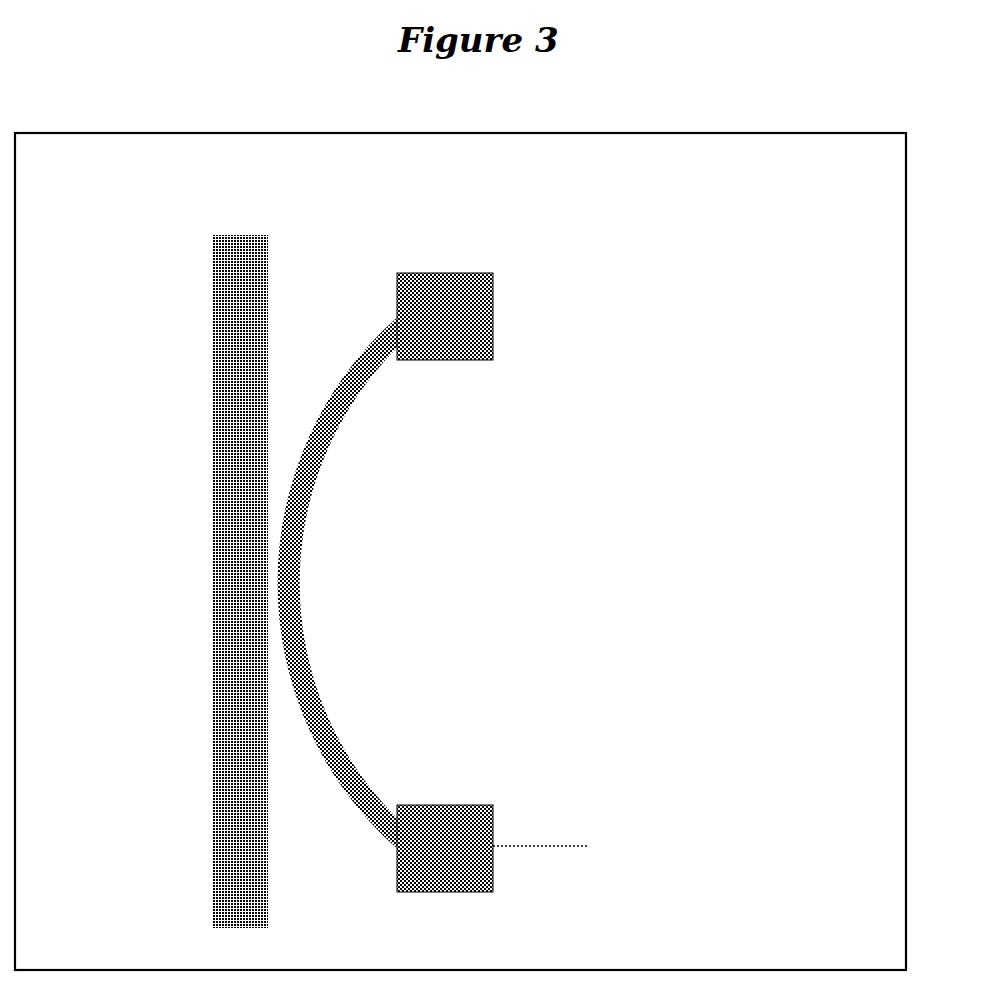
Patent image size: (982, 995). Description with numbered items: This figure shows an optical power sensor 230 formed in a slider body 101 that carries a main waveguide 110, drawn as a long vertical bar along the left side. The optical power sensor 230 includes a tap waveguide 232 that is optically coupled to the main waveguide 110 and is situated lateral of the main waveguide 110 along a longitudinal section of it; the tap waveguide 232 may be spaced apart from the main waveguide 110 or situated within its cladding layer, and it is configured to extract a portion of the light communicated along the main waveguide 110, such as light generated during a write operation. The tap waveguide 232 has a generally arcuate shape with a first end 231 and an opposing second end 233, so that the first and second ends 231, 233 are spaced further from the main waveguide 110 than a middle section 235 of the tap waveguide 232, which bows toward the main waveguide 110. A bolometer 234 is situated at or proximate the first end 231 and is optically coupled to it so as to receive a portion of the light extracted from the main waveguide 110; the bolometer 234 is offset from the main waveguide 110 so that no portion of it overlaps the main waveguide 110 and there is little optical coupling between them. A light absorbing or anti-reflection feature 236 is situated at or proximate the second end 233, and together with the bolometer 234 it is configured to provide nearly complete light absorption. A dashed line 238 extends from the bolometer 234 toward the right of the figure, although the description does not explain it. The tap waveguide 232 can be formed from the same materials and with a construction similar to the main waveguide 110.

The slider body 101 is at (742, 241).
The main waveguide 110 is at (227, 450).
The optical power sensor 230 is at (453, 575).
The first end 231 is at (366, 860).
The tap waveguide 232 is at (315, 698).
The second end 233 is at (376, 303).
The bolometer 234 is at (447, 805).
The middle section 235 is at (328, 577).
The light absorbing or anti-reflection feature 236 is at (450, 275).
The axis / dashed reference line 238 is at (553, 846).